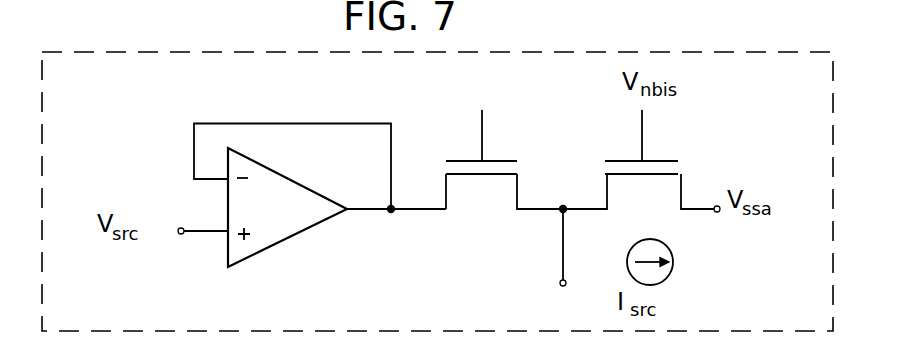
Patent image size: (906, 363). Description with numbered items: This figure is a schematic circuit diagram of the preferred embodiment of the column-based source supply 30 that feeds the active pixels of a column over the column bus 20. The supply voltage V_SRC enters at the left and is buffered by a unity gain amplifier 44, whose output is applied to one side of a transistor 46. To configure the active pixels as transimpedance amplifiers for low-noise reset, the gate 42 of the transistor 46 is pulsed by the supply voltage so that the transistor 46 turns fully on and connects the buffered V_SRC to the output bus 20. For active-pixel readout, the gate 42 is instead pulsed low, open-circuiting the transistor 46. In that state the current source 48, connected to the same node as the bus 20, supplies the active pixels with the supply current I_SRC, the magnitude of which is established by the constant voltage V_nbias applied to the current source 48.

The source supply 30 is at (150, 76).
The unity gain amplifier 44 is at (295, 181).
The transistor 46 is at (486, 176).
The gate 42 is at (482, 127).
The current source 48 is at (643, 176).
The column bus 20 is at (563, 258).